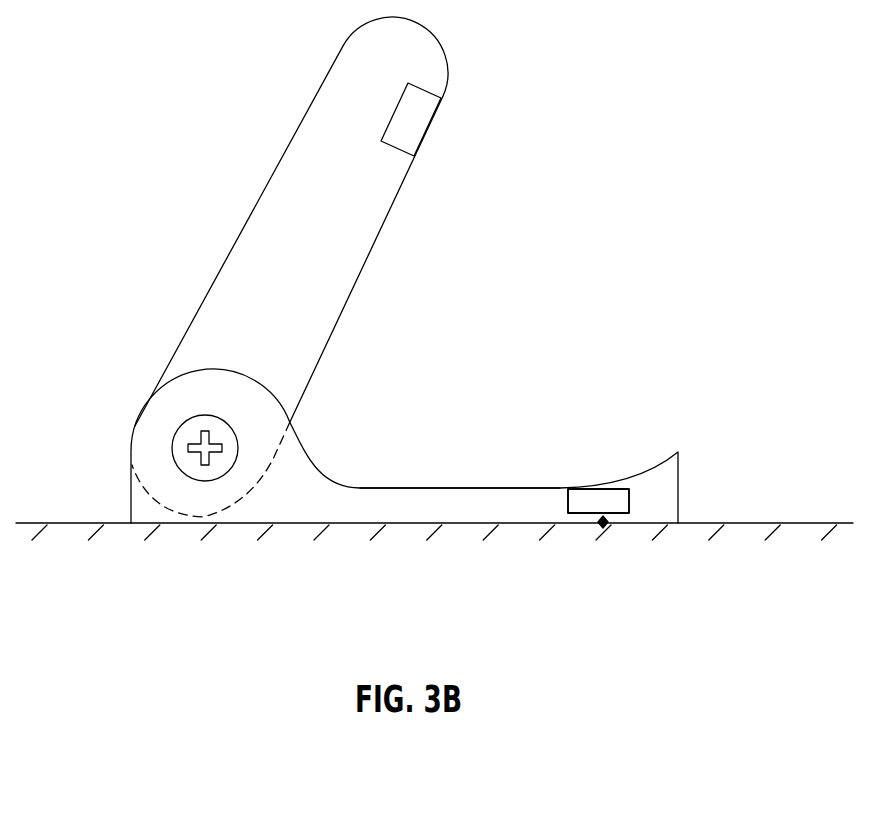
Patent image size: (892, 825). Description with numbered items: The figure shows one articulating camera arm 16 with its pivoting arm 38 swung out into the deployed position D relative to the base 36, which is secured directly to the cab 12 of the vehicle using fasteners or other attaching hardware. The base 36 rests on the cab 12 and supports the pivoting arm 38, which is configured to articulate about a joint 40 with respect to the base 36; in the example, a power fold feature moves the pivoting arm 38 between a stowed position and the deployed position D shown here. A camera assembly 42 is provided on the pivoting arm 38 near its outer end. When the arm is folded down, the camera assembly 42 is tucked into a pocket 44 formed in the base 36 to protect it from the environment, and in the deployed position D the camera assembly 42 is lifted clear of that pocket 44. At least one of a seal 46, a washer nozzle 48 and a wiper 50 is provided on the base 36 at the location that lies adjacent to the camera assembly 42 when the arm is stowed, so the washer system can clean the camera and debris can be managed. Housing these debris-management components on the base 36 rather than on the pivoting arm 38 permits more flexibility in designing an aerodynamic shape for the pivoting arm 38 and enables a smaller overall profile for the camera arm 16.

The cab 12 is at (748, 523).
The camera arm 16 is at (661, 251).
The base 36 is at (353, 510).
The pivoting arm 38 is at (260, 215).
The joint 40 is at (173, 452).
The camera assembly 42 is at (390, 117).
The pocket 44 is at (472, 488).
The seal 46 is at (603, 526).
The washer nozzle 48 is at (598, 501).
The wiper 50 is at (598, 501).
The deployed position D is at (534, 86).